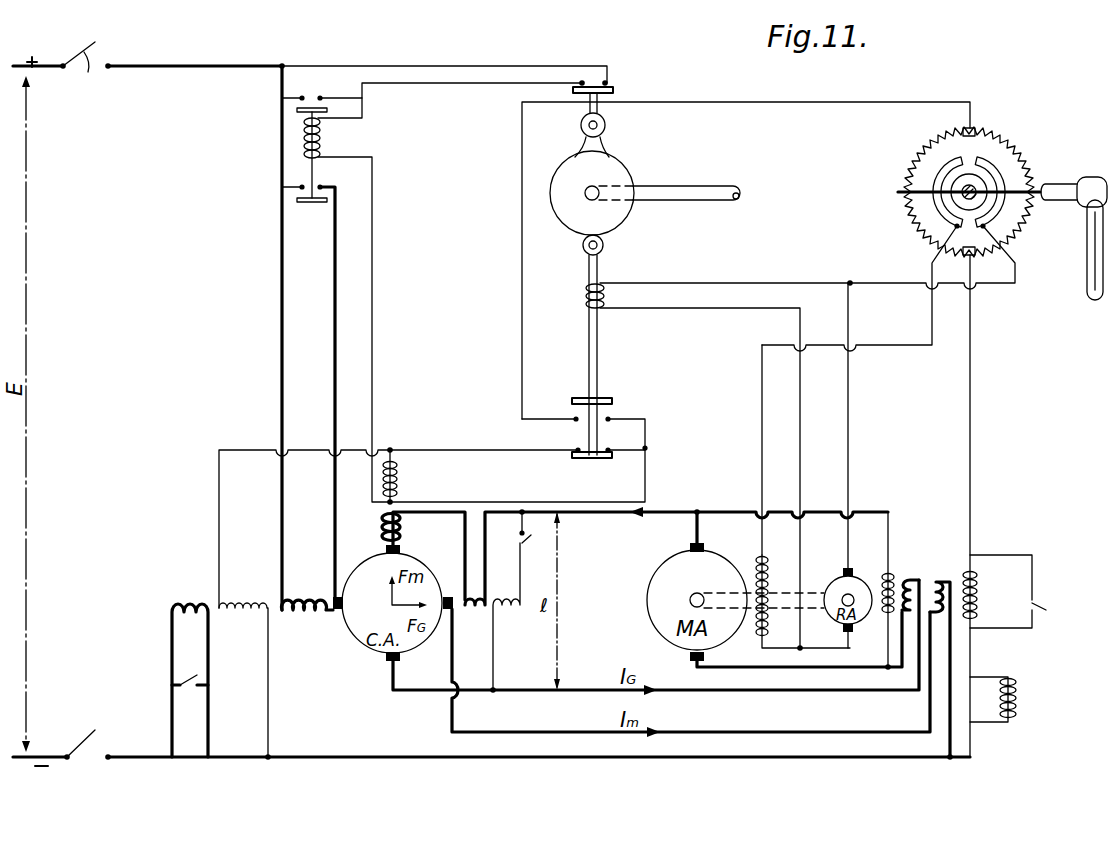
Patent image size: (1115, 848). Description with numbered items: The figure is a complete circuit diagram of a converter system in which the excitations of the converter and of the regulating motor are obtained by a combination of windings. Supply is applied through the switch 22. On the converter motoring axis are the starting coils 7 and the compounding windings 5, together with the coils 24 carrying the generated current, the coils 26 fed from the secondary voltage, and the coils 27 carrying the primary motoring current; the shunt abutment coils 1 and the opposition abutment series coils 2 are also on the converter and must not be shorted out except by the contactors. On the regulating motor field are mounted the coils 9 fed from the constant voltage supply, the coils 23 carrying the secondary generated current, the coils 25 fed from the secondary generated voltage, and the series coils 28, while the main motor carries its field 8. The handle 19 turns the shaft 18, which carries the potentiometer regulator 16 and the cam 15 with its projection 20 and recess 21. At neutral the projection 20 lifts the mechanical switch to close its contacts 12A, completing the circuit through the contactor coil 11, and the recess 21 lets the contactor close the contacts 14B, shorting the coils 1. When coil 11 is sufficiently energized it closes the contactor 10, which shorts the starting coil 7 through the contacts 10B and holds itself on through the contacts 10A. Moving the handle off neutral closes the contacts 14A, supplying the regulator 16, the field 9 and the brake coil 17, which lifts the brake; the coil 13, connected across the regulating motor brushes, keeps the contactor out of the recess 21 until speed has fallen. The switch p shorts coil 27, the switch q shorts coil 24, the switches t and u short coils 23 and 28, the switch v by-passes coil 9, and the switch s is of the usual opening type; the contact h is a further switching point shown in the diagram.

The shunt abutment coils 1 is at (397, 487).
The opposition abutment series coils 2 is at (400, 537).
The compounding windings 5 is at (243, 666).
The starting coils 7 is at (308, 593).
The main motor field 8 is at (762, 576).
The regulating motor field coils 9 is at (976, 584).
The contactor 10 is at (306, 207).
The contacts 10A is at (306, 97).
The contacts 10B is at (330, 173).
The contactor coil 11 is at (322, 137).
The switch contacts 12A is at (583, 85).
The coil 13 is at (603, 296).
The contacts 14A is at (610, 418).
The contacts 14B is at (613, 447).
The cam 15 is at (620, 160).
The potentiometer regulator 16 is at (1010, 145).
The brake coil 17 is at (1018, 701).
The shaft 18 is at (688, 197).
The handle 19 is at (1088, 261).
The projection 20 is at (585, 153).
The recess 21 is at (612, 233).
The switch 22 is at (88, 748).
The coils 23 is at (905, 578).
The coils 24 is at (476, 594).
The coils 25 is at (882, 580).
The coils 26 is at (509, 618).
The coils 27 is at (190, 666).
The coils 28 is at (941, 578).
The contact h is at (531, 544).
The switch p is at (190, 675).
The switch q is at (478, 560).
The switch s is at (890, 532).
The switch t is at (918, 646).
The switch u is at (950, 695).
The switch v is at (1012, 596).